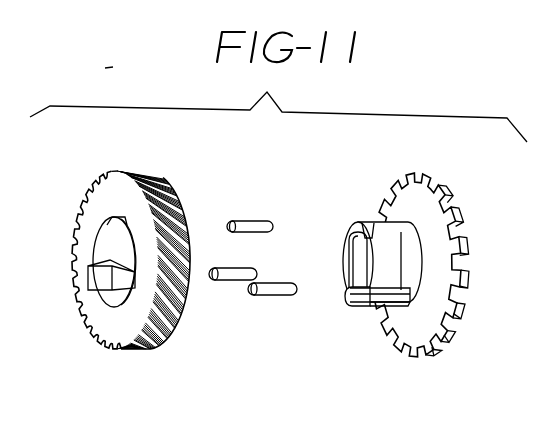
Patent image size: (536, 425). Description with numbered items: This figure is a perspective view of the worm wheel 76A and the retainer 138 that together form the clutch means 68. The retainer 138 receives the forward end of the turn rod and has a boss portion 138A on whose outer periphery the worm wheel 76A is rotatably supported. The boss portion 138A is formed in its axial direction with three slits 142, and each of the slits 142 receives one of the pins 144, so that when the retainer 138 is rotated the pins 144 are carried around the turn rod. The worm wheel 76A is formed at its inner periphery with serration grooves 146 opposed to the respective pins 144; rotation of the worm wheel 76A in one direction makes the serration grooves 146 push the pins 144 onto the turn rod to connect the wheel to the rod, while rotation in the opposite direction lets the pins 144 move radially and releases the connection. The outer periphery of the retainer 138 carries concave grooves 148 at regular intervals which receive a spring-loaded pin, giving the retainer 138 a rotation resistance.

The worm wheel 76A is at (105, 241).
The serration grooves 146 is at (113, 222).
The pin 144 is at (255, 220).
The clutch means 68 is at (415, 264).
The retainer 138 is at (444, 268).
The concave grooves 148 is at (452, 202).
The slits 142 is at (365, 216).
The boss portion 138A is at (401, 232).